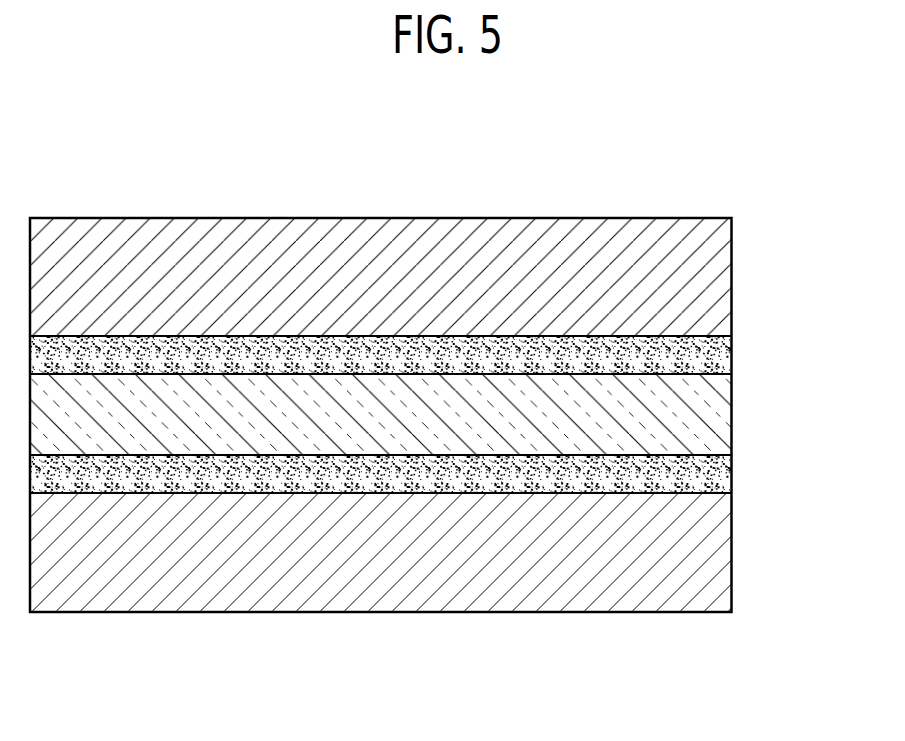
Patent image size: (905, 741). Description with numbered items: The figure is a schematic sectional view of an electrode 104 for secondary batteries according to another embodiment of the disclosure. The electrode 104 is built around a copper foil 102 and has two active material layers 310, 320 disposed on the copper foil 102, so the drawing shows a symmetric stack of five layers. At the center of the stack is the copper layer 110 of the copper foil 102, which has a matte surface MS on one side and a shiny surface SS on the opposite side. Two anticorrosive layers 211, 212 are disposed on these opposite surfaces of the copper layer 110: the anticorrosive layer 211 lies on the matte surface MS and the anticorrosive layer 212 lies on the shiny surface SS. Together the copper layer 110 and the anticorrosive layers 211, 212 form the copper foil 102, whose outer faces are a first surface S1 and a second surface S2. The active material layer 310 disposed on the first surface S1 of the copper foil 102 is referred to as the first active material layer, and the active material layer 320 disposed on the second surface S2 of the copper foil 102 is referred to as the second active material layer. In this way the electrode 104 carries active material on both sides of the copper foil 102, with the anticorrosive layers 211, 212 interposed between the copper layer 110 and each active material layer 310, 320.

The electrode for secondary batteries 104 is at (80, 133).
The first active material layer 310 is at (717, 274).
The anticorrosive layer 211 is at (717, 355).
The copper layer 110 is at (717, 415).
The anticorrosive layer 212 is at (717, 477).
The second active material layer 320 is at (717, 548).
The copper foil 102 is at (817, 353).
The first surface S1 is at (422, 336).
The matte surface MS is at (256, 374).
The shiny surface SS is at (256, 455).
The second surface S2 is at (420, 493).